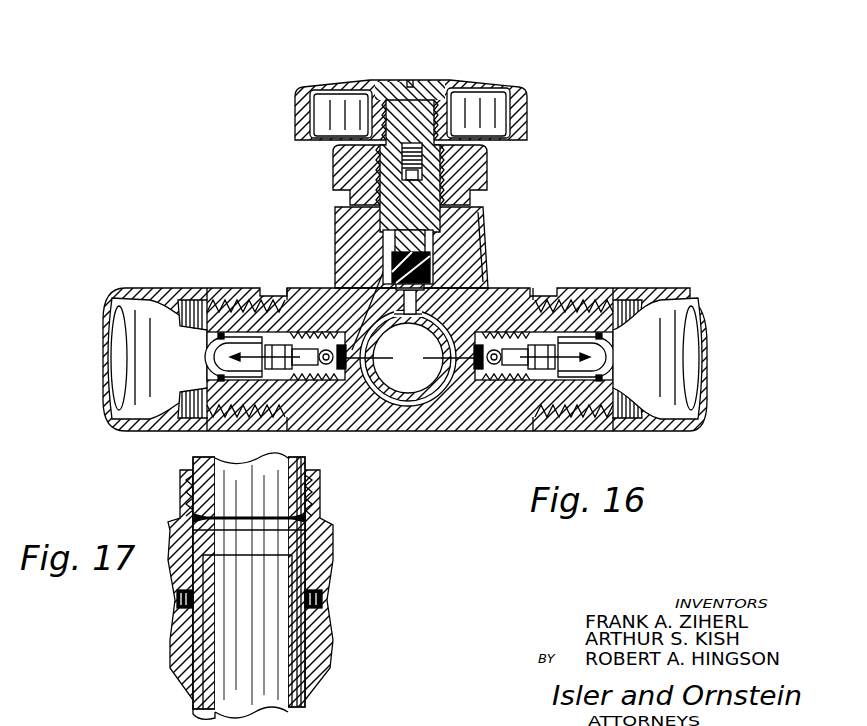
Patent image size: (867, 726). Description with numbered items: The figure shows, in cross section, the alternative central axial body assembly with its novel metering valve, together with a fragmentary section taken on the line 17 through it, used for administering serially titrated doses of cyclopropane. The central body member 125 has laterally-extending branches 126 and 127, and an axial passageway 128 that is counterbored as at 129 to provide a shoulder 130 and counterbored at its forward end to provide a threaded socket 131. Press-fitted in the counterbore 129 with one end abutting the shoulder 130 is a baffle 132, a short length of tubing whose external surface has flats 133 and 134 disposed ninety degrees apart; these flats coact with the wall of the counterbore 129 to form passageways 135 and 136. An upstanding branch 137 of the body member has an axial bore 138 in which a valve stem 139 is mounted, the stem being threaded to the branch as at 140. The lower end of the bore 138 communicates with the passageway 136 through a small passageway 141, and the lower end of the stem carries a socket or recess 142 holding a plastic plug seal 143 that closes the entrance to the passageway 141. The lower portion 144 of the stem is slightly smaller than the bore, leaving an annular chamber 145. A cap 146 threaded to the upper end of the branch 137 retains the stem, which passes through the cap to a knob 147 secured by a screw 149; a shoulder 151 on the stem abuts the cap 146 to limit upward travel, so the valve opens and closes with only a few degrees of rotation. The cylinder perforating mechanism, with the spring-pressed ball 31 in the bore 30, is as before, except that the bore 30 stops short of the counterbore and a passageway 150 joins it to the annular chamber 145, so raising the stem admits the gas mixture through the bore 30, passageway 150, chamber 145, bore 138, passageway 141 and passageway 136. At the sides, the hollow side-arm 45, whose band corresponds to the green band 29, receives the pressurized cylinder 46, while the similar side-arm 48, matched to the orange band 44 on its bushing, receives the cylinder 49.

In FIG. 16, the section line 17— 17 is at (342, 350).
In FIG. 16, the band 29 is at (545, 431).
In FIG. 16, the bore 30 is at (343, 373).
In FIG. 17, the bore 30 is at (177, 603).
In FIG. 16, the spring-pressed ball 31 is at (277, 427).
In FIG. 16, the band 44 is at (273, 288).
In FIG. 16, the side-arm 45 is at (673, 432).
In FIG. 16, the cylinder 46 is at (683, 335).
In FIG. 16, the side-arm 48 is at (125, 431).
In FIG. 16, the cylinder 49 is at (130, 370).
In FIG. 16, the central body member 125 is at (398, 422).
In FIG. 17, the central body member 125 is at (305, 688).
In FIG. 16, the laterally-extending branch 126 is at (512, 284).
In FIG. 17, the laterally-extending branch 126 is at (333, 535).
In FIG. 16, the laterally-extending branch 127 is at (292, 288).
In FIG. 17, the laterally-extending branch 127 is at (193, 522).
In FIG. 17, the axial passageway 128 is at (292, 567).
In FIG. 16, the counterbore 129 is at (390, 395).
In FIG. 17, the counterbore 129 is at (208, 643).
In FIG. 17, the shoulder 130 is at (205, 560).
In FIG. 17, the threaded socket 131 is at (182, 480).
In FIG. 16, the baffle 132 is at (388, 408).
In FIG. 17, the baffle 132 is at (200, 665).
In FIG. 16, the flat 133 is at (463, 372).
In FIG. 17, the flat 133 is at (296, 637).
In FIG. 16, the flat 134 is at (487, 267).
In FIG. 16, the passageway 135 is at (530, 288).
In FIG. 17, the passageway 135 is at (299, 650).
In FIG. 16, the passageway 136 is at (490, 237).
In FIG. 16, the upstanding branch 137 is at (337, 228).
In FIG. 16, the axial bore 138 is at (485, 203).
In FIG. 16, the valve stem 139 is at (388, 242).
In FIG. 16, the threaded connection 140 is at (487, 167).
In FIG. 16, the passageway 141 is at (390, 252).
In FIG. 16, the socket or recess 142 is at (385, 236).
In FIG. 16, the plug seal 143 is at (487, 210).
In FIG. 16, the lower portion of the stem 144 is at (487, 240).
In FIG. 16, the annular chamber 145 is at (488, 247).
In FIG. 16, the cap 146 is at (333, 168).
In FIG. 16, the knob 147 is at (520, 92).
In FIG. 16, the screw 149 is at (423, 87).
In FIG. 16, the passageway 150 is at (352, 350).
In FIG. 16, the shoulder 151 is at (378, 88).